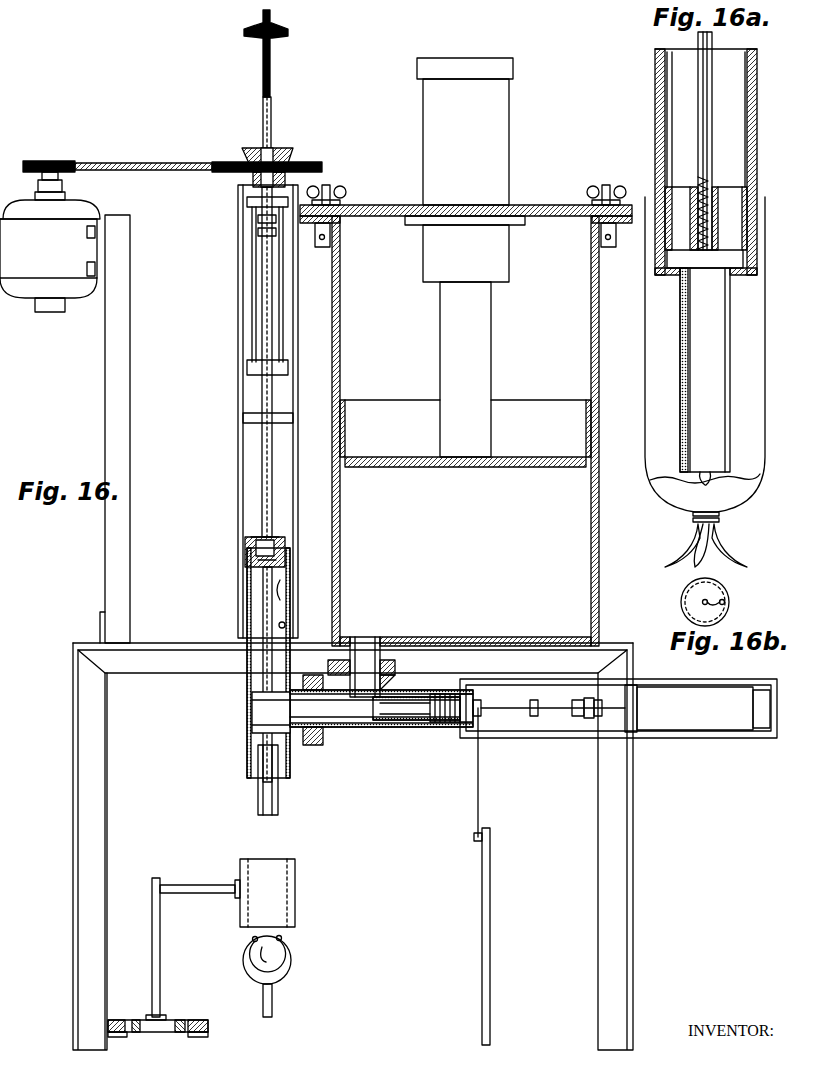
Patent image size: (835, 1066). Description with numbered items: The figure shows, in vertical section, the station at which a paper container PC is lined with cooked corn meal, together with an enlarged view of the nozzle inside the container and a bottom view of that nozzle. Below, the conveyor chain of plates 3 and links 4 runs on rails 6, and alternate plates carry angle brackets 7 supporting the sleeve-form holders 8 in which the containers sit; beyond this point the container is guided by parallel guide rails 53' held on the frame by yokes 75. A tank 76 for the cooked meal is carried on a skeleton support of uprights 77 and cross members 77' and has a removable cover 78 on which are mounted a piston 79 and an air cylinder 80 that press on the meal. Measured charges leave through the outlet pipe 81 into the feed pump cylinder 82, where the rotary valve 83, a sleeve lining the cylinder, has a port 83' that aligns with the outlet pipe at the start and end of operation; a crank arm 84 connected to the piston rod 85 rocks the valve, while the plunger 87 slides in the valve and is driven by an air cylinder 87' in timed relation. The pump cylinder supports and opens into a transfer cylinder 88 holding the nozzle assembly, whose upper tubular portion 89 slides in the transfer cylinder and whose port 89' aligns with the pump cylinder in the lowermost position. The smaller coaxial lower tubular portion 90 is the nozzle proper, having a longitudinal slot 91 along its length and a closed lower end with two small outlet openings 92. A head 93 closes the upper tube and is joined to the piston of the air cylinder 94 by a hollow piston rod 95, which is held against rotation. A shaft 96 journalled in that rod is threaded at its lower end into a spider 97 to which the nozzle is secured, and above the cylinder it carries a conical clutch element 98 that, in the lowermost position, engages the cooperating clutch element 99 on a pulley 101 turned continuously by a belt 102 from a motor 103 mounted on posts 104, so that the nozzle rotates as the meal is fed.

In FIG. 16, the plates 3 is at (157, 1032).
In FIG. 16, the links 4 is at (140, 1012).
In FIG. 16, the rails 6 is at (108, 1026).
In FIG. 16, the angle brackets 7 is at (160, 916).
In FIG. 16, the holders 8 is at (295, 892).
In FIG. 16, the guide rails 53' is at (273, 958).
In FIG. 16, the yokes 75 is at (291, 967).
In FIG. 16, the tank 76 is at (599, 520).
In FIG. 16, the uprights 77 is at (355, 846).
In FIG. 16, the cross members 77' is at (353, 645).
In FIG. 16, the cover 78 is at (392, 205).
In FIG. 16, the piston 79 is at (532, 450).
In FIG. 16, the air cylinder 80 is at (502, 155).
In FIG. 16, the outlet pipe 81 is at (372, 642).
In FIG. 16, the feed pump cylinder 82 is at (345, 727).
In FIG. 16, the rotary valve 83 is at (416, 728).
In FIG. 16, the port 83' is at (379, 673).
In FIG. 16, the crank arm 84 is at (478, 786).
In FIG. 16, the piston rod 85 is at (490, 908).
In FIG. 16, the plunger 87 is at (449, 727).
In FIG. 16, the air cylinder 87' is at (618, 725).
In FIG. 16, the transfer cylinder 88 is at (247, 700).
In FIG. 16, the upper tubular portion 89 is at (298, 618).
In FIG. 16A, the upper tubular portion 89 is at (688, 162).
In FIG. 16, the port 89' is at (299, 584).
In FIG. 16, the lower tubular portion 90 is at (262, 797).
In FIG. 16A, the lower tubular portion 90 is at (680, 385).
In FIG. 16B, the lower tubular portion 90 is at (725, 592).
In FIG. 16, the longitudinal slot 91 is at (274, 802).
In FIG. 16A, the longitudinal slot 91 is at (730, 385).
In FIG. 16A, the outlet openings 92 is at (707, 488).
In FIG. 16B, the outlet openings 92 is at (725, 602).
In FIG. 16, the head 93 is at (245, 567).
In FIG. 16, the air cylinder 94 is at (255, 305).
In FIG. 16, the hollow piston rod 95 is at (263, 503).
In FIG. 16, the shaft 96 is at (263, 83).
In FIG. 16A, the shaft 96 is at (712, 147).
In FIG. 16A, the spider 97 is at (718, 225).
In FIG. 16, the conical clutch element 98 is at (288, 32).
In FIG. 16, the conical clutch element 99 is at (278, 152).
In FIG. 16, the pulley 101 is at (318, 162).
In FIG. 16, the belt 102 is at (160, 173).
In FIG. 16, the motor 103 is at (78, 298).
In FIG. 16, the posts 104 is at (130, 405).
In FIG. 16A, the paper container PC is at (652, 330).